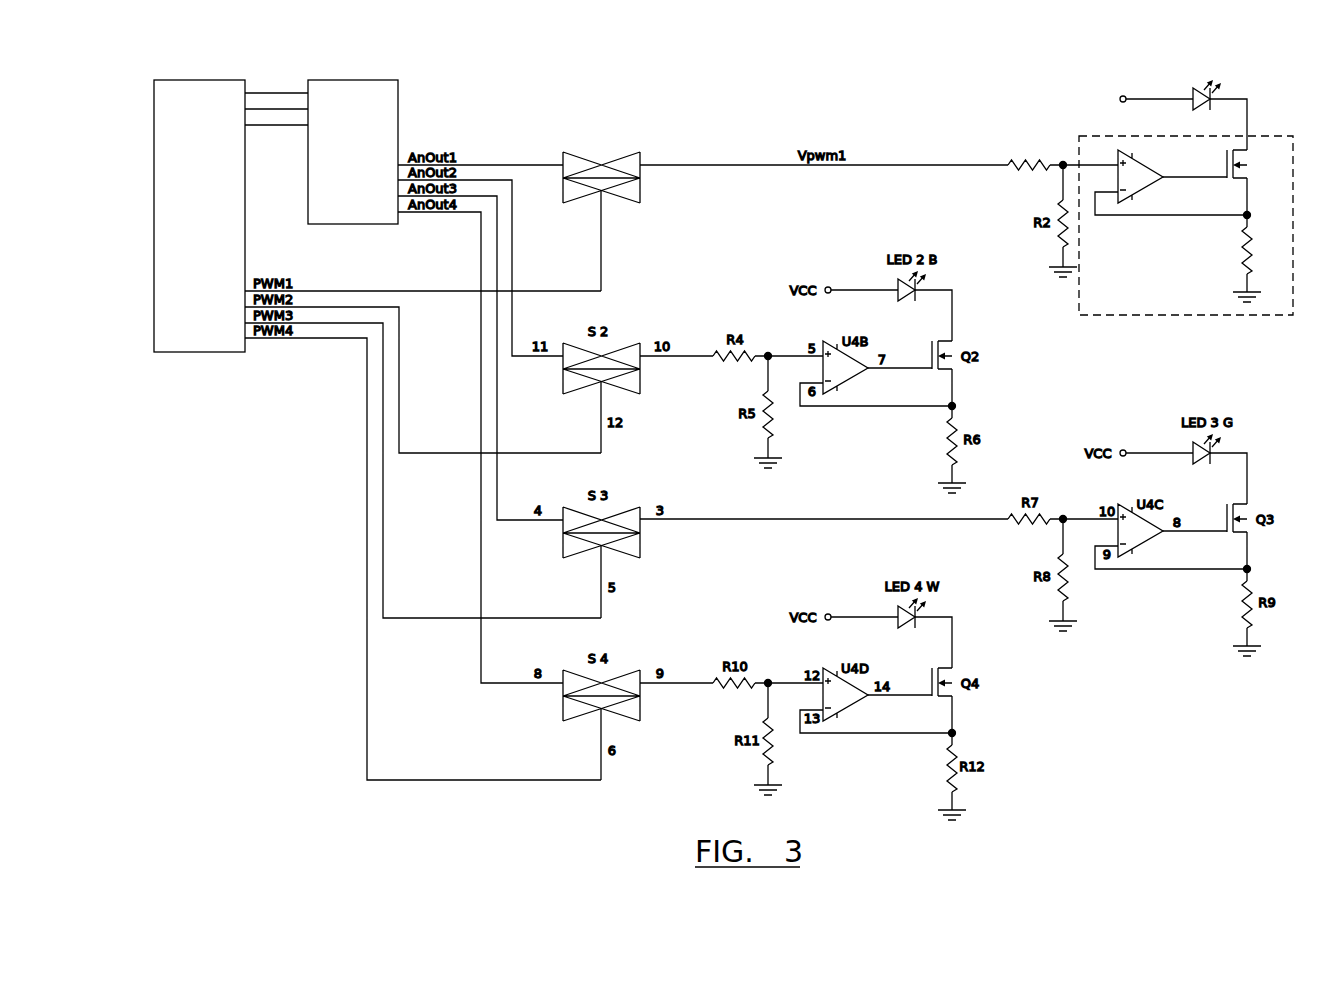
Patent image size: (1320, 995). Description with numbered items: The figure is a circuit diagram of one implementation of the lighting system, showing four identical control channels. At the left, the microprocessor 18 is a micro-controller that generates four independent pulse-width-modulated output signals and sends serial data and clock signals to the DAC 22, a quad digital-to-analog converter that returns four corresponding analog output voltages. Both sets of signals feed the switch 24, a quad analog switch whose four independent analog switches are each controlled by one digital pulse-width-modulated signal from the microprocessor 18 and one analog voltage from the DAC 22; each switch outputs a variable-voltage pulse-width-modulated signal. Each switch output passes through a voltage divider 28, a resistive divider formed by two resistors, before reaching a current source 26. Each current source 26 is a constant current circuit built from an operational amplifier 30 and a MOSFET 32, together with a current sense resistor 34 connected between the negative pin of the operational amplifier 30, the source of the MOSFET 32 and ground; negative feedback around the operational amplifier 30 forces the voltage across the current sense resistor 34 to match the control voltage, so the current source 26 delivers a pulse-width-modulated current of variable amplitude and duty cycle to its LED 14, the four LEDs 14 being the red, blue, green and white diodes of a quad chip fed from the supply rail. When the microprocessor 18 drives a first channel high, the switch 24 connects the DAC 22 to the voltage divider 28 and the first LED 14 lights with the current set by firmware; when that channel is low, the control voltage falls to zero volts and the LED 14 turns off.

The LED 14 is at (1246, 76).
The microprocessor 18 is at (222, 79).
The DAC 22 is at (398, 108).
The switch 24 is at (620, 124).
The current source 26 is at (1120, 318).
The voltage divider 28 is at (1007, 145).
The operational amplifier 30 is at (1135, 216).
The MOSFET 32 is at (1276, 184).
The current sense resistor 34 is at (1269, 267).